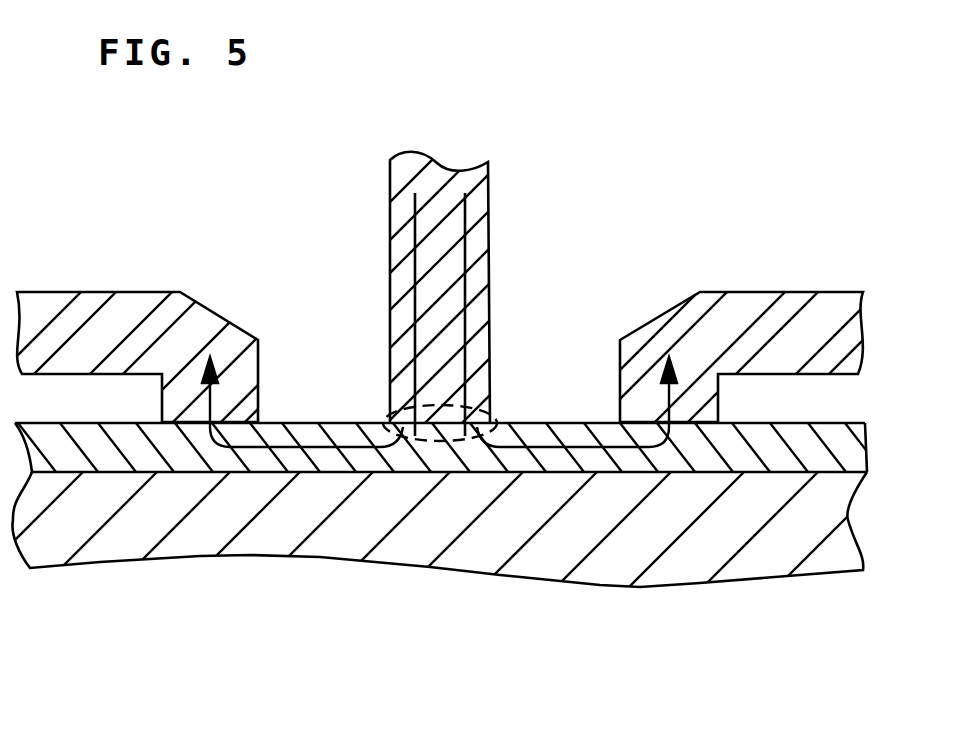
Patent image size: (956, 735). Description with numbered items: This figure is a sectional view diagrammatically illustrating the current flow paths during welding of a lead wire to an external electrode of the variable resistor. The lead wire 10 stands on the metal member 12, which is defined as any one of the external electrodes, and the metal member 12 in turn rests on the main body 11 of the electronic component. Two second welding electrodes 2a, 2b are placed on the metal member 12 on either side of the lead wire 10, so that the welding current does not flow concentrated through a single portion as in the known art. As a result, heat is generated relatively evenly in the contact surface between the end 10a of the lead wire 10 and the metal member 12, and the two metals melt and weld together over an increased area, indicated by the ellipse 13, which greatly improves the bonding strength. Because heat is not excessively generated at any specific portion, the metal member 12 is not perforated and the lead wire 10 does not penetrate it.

The second welding electrode 2a is at (95, 323).
The second welding electrode 2b is at (767, 323).
The lead wire 10 is at (490, 213).
The end of the lead wire 10a is at (442, 440).
The main body 11 is at (620, 537).
The metal member 12 is at (768, 455).
The ellipse 13 is at (430, 412).